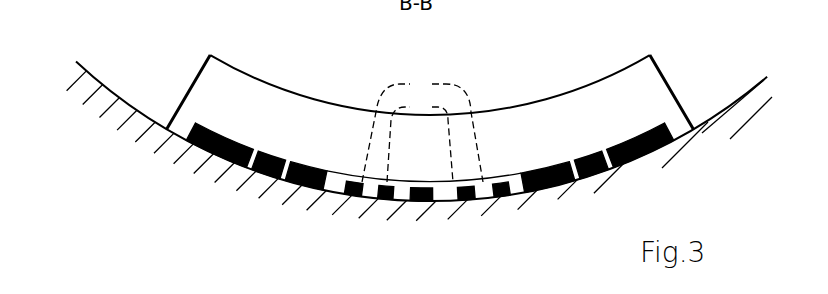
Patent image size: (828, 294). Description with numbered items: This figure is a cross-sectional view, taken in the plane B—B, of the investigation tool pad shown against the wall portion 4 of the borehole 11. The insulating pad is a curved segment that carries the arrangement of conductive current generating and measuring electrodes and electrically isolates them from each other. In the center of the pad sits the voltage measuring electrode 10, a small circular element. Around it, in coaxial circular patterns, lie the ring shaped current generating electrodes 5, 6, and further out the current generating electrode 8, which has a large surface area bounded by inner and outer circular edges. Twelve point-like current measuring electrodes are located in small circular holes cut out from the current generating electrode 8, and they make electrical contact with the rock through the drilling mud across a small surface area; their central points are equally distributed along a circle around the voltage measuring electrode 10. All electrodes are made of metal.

The wall portion 4 is at (124, 99).
The borehole 11 is at (270, 30).
The current generating electrode 8 is at (238, 146).
The ring shaped current generating electrode 6 is at (422, 127).
The ring shaped current generating electrode 5 is at (420, 138).
The voltage measuring electrode 10 is at (421, 181).